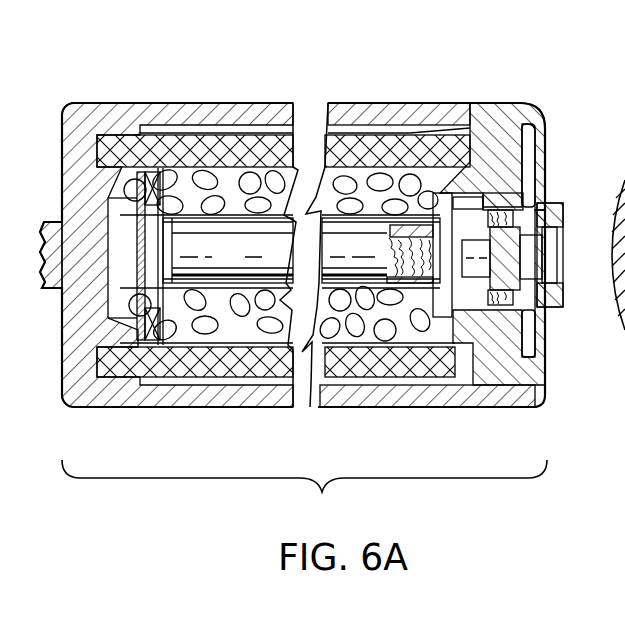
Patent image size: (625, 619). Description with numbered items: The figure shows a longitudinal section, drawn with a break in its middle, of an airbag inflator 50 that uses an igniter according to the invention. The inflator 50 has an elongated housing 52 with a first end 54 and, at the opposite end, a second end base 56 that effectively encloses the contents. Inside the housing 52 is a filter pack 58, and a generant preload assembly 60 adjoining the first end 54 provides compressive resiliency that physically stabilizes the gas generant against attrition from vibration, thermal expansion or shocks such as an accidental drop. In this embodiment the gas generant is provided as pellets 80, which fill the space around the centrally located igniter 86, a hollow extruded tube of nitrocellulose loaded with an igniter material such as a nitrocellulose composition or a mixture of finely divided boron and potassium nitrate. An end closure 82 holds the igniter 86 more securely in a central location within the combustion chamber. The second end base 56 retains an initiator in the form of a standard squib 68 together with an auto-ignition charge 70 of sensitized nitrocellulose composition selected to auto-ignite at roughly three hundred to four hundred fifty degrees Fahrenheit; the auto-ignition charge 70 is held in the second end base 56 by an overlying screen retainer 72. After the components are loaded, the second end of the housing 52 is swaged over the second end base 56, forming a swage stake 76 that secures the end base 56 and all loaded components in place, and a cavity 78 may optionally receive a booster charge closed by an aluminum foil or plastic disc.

The inflator 50 is at (338, 103).
The elongated housing 52 is at (425, 112).
The first end 54 is at (82, 125).
The second end base 56 is at (497, 130).
The filter pack 58 is at (240, 133).
The generant preload assembly 60 is at (183, 163).
The squib 68 is at (500, 262).
The auto-ignition charge 70 is at (472, 338).
The screen retainer 72 is at (543, 322).
The swage stake 76 is at (535, 377).
The cavity 78 is at (540, 205).
The pellets 80 is at (357, 325).
The end closure 82 is at (470, 222).
The igniter 86 is at (301, 250).